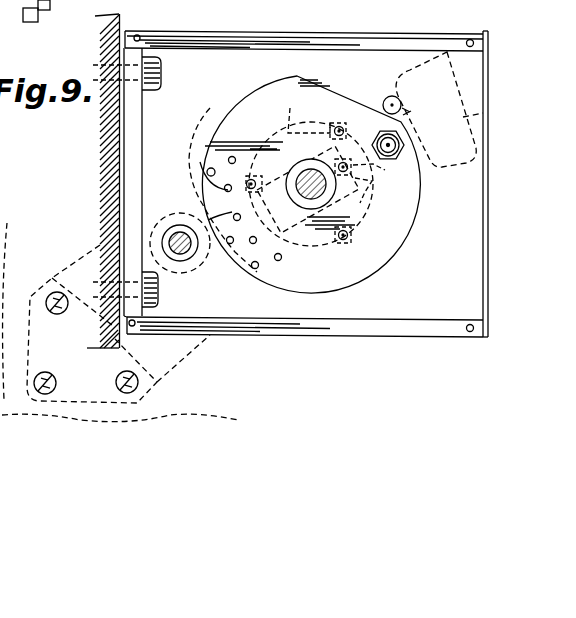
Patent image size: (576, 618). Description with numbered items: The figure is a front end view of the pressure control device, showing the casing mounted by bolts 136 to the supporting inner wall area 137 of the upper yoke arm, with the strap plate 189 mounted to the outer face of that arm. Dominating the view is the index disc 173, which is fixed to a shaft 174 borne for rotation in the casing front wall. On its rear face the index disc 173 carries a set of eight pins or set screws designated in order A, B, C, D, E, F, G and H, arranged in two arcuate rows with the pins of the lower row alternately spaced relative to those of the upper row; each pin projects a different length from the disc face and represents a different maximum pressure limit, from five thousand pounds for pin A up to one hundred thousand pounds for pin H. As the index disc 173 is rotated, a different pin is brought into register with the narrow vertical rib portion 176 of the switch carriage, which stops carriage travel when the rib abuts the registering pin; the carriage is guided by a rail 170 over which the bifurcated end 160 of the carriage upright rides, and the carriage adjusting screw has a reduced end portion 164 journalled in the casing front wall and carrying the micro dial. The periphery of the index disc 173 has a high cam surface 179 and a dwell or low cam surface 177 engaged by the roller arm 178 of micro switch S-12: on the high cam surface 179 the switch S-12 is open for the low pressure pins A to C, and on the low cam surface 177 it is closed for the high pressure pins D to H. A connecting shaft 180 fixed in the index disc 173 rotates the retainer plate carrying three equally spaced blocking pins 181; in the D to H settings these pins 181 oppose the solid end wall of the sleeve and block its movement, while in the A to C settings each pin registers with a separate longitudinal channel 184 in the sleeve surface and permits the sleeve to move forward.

The supporting inner wall area 137 is at (110, 35).
The bolts 136 is at (158, 72).
The vertical rib portion 176 is at (187, 275).
The reduced end portion 164 is at (178, 240).
The high cam surface 179 is at (418, 212).
The index disc 173 is at (235, 105).
The low peripheral cam surface 177 is at (330, 89).
The blocking pins 181 is at (270, 137).
The longitudinal channel 184 is at (295, 120).
The shaft 174 is at (315, 186).
The bifurcated end 160 is at (369, 189).
The rail 170 is at (376, 168).
The connecting shaft 180 is at (403, 144).
The roller arm 178 is at (412, 100).
The micro switch S-12 is at (453, 103).
The strap plate 189 is at (52, 276).
The pin A is at (229, 158).
The pin B is at (207, 170).
The pin C is at (224, 186).
The pin D is at (233, 215).
The pin E is at (228, 244).
The pin F is at (250, 245).
The pin G is at (253, 269).
The pin H is at (276, 262).